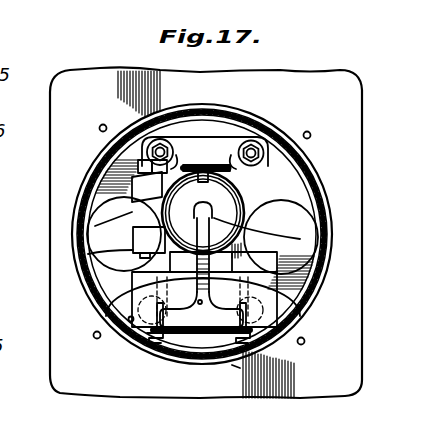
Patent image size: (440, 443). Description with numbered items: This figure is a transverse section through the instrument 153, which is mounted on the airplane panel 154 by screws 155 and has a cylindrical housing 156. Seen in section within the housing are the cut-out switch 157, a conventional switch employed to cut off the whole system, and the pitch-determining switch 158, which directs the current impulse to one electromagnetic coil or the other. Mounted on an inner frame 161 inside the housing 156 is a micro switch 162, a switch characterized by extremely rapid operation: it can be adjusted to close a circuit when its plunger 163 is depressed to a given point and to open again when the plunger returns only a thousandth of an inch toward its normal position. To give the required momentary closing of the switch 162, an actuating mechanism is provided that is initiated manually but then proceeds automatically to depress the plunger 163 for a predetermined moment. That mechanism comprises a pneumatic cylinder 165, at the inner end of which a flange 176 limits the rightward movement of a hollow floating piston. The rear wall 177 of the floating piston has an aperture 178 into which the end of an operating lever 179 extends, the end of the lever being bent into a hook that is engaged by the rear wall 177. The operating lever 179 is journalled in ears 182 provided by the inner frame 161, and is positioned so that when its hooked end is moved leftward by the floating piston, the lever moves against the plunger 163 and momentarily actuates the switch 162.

The instrument 153 is at (236, 366).
The airplane panel 154 is at (306, 97).
The screws 155 is at (103, 124).
The cylindrical housing 156 is at (152, 268).
The cut-out switch 157 is at (297, 213).
The pitch-determining switch 158 is at (194, 213).
The inner frame 161 is at (170, 358).
The switch 162 is at (262, 297).
The plunger 163 is at (203, 250).
The pneumatic cylinder 165 is at (135, 178).
The flange 176 is at (228, 188).
The rear wall 177 is at (300, 239).
The aperture 178 is at (90, 256).
The operating lever 179 is at (128, 318).
The ears 182 is at (130, 348).